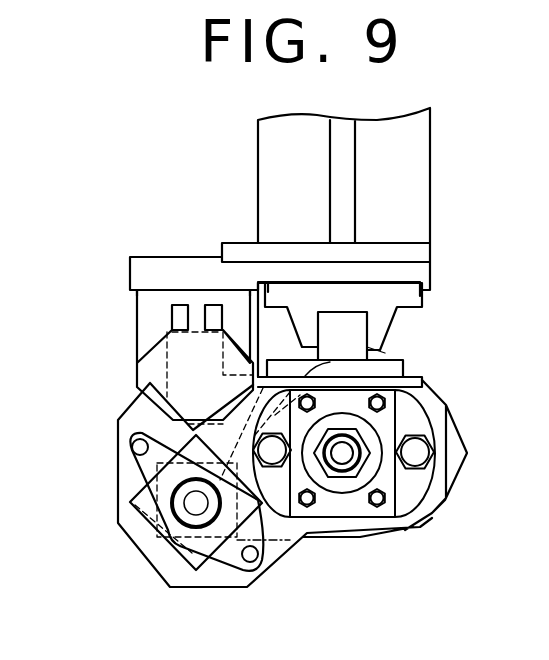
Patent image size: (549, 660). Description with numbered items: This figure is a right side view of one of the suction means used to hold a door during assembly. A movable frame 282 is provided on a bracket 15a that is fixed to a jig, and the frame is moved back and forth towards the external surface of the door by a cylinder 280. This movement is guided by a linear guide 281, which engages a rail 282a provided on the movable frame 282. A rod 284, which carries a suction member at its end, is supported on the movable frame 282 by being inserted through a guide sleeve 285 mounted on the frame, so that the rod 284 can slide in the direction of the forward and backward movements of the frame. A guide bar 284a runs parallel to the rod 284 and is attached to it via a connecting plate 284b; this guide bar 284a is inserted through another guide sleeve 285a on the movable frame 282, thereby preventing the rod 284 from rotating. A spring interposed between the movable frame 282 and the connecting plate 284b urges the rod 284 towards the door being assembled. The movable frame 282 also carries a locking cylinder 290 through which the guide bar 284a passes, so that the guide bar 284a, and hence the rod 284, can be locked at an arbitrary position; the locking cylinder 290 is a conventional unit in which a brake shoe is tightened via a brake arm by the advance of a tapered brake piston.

The bracket 15a is at (423, 184).
The cylinder 280 is at (150, 355).
The linear guide 281 is at (357, 328).
The movable frame 282 is at (246, 582).
The rail 282a is at (397, 323).
The rod 284 is at (343, 458).
The guide bar 284a is at (194, 505).
The connecting plate 284b is at (275, 540).
The guide sleeve 285 is at (413, 490).
The guide sleeve 285a is at (163, 490).
The locking cylinder 290 is at (130, 502).